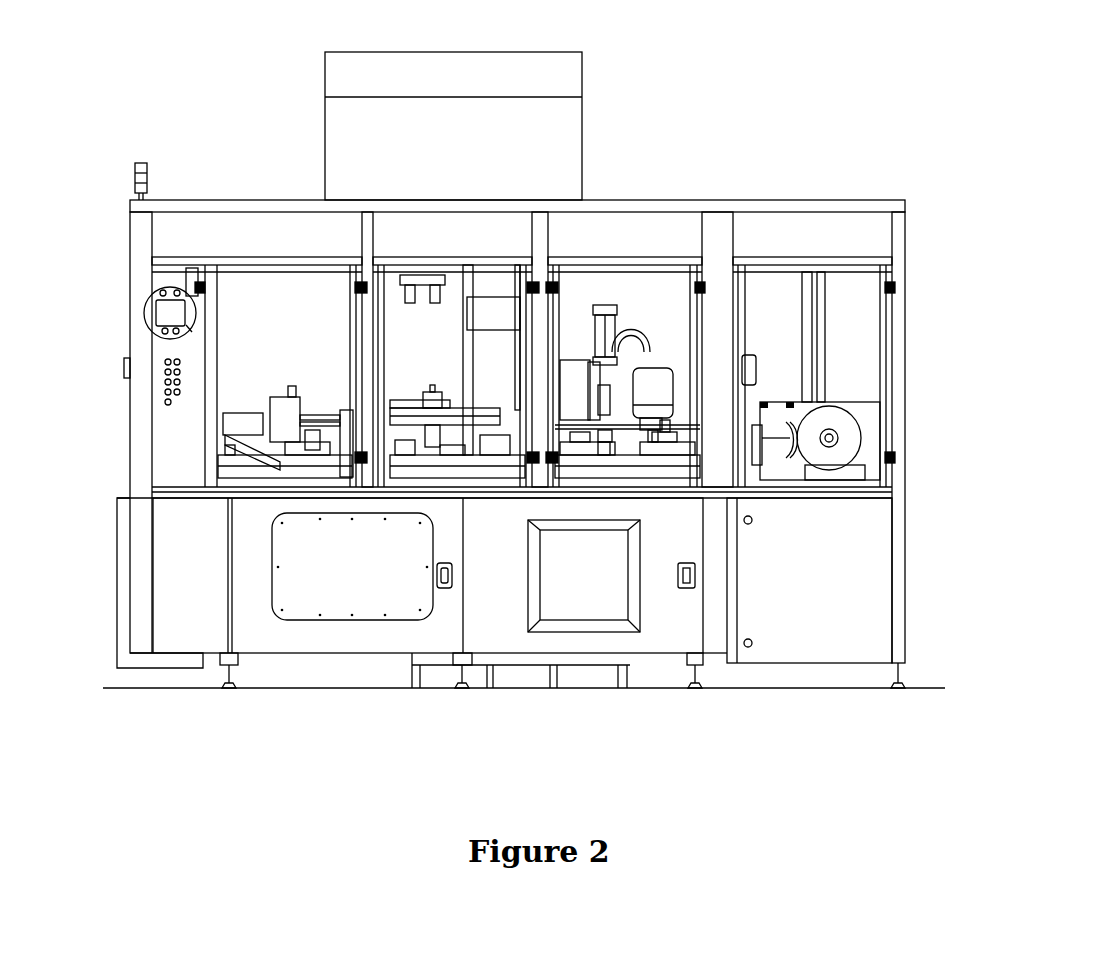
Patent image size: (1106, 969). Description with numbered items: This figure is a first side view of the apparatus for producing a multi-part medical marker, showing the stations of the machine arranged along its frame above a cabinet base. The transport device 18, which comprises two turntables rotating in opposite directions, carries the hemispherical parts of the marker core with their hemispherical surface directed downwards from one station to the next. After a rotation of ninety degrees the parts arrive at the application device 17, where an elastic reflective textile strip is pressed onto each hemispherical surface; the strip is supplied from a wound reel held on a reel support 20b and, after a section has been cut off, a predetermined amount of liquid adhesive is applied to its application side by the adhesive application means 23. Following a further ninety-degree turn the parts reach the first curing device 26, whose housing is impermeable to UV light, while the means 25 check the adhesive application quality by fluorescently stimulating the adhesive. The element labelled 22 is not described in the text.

The application device 17 is at (612, 470).
The transport device 18 is at (272, 467).
The reel support 20b is at (837, 440).
The outfeed station 22 is at (678, 468).
The adhesive application means 23 is at (647, 383).
The means for determining adhesive application quality 25 is at (487, 587).
The first curing device 26 is at (518, 465).